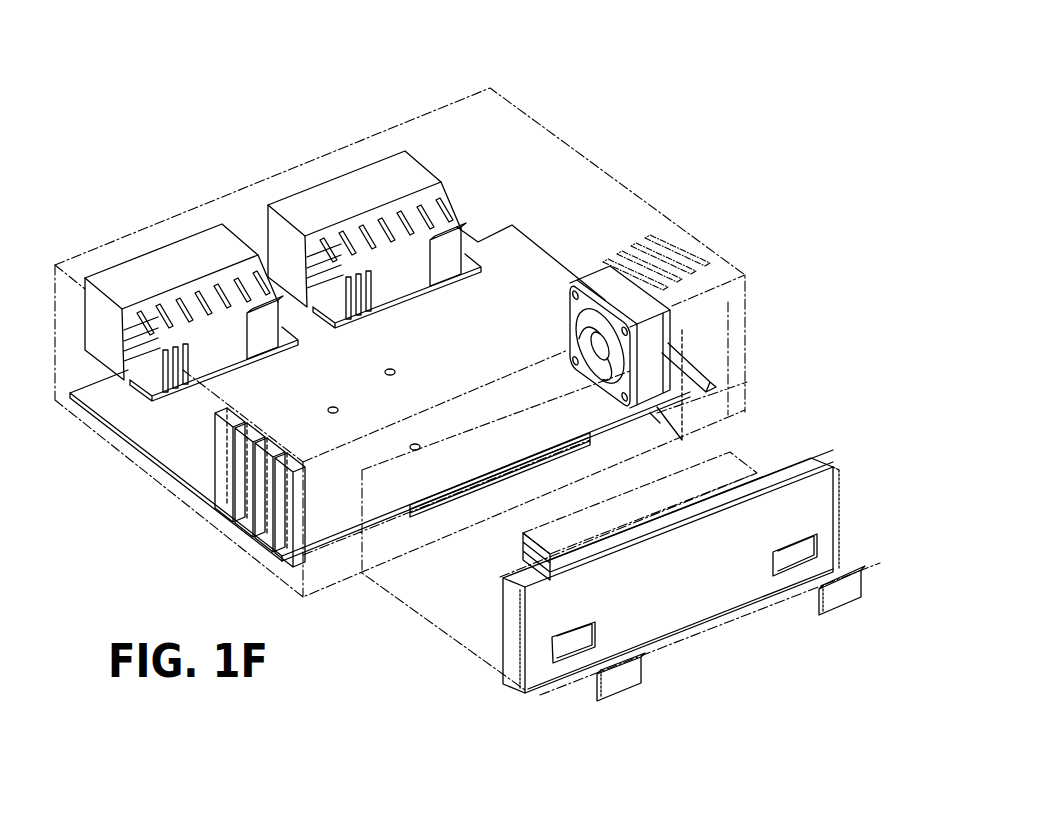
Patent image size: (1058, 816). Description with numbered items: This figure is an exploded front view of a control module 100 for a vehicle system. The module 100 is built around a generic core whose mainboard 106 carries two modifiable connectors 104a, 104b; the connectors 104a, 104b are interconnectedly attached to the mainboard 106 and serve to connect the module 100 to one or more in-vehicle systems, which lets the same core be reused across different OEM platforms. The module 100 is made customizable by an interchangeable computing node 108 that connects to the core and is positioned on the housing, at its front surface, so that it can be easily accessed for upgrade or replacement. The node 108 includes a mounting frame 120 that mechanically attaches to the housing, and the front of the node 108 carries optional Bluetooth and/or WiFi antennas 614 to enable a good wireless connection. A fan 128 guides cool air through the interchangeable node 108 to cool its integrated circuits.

The module 100 is at (668, 168).
The connector 104a is at (340, 190).
The connector 104b is at (165, 253).
The mainboard 106 is at (160, 437).
The interchangeable computing node 108 is at (752, 452).
The mounting frame 120 is at (805, 503).
The fan 128 is at (649, 373).
The Bluetooth and/or WiFi antennas 614 is at (641, 672).